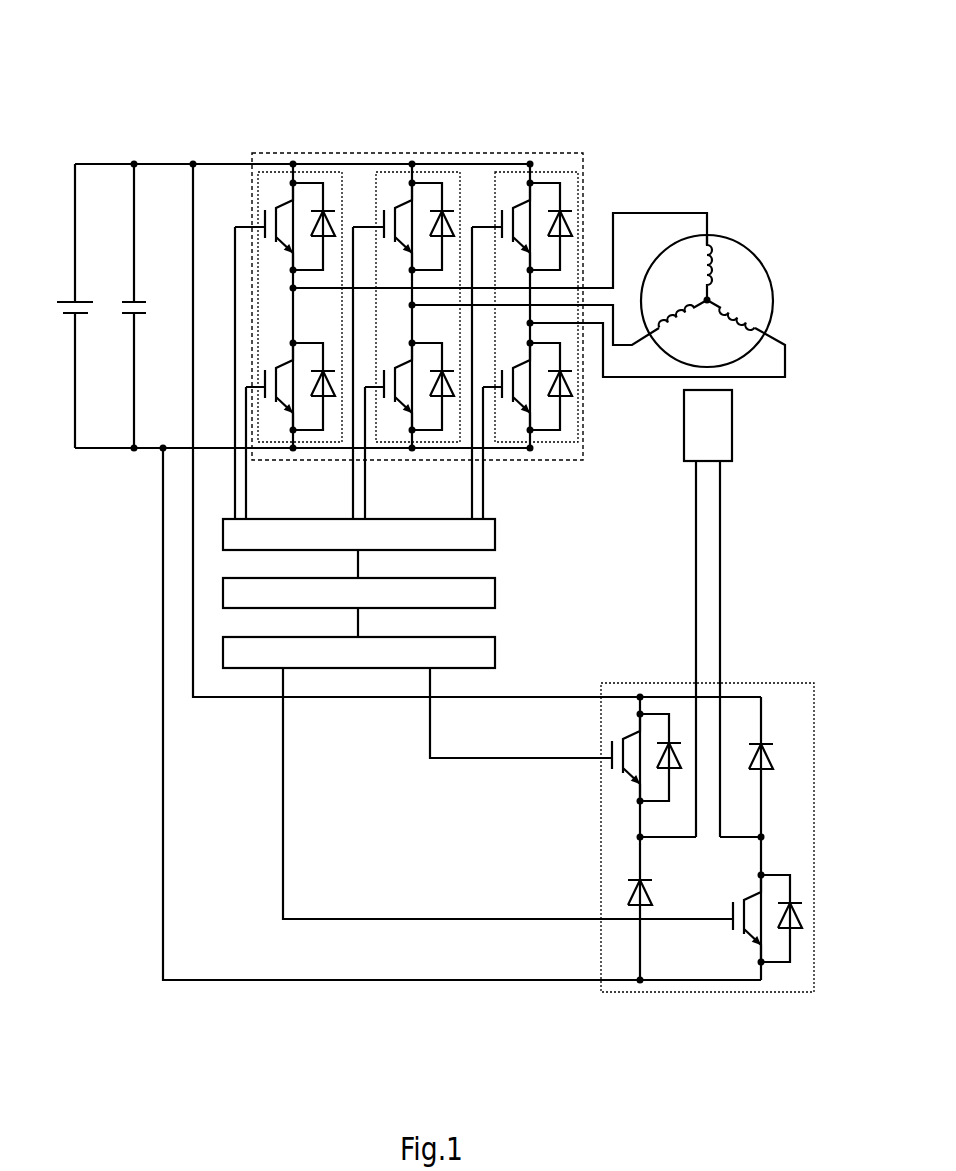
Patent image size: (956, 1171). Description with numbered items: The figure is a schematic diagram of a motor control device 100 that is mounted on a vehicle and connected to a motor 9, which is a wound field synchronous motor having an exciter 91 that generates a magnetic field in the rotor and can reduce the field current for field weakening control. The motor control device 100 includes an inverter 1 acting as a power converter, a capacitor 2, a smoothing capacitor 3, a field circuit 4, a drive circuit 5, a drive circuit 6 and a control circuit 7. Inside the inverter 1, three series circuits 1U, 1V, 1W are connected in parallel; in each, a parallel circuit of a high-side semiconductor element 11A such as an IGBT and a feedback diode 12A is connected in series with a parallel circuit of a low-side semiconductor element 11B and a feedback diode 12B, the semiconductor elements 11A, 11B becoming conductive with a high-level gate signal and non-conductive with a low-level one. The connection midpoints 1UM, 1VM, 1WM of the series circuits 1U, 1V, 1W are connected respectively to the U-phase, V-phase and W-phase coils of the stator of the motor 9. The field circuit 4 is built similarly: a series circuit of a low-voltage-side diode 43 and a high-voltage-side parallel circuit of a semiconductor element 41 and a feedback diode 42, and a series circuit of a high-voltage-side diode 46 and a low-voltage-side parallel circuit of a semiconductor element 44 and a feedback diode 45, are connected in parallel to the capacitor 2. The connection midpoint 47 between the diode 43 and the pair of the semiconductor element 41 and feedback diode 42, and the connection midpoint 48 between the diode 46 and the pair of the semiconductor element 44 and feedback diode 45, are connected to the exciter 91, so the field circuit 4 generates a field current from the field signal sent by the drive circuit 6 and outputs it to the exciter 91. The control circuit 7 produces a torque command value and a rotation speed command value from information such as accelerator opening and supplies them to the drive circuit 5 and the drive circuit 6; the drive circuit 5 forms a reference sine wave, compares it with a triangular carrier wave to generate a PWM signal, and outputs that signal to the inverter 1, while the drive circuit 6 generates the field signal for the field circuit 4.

The motor control device 100 is at (666, 79).
The inverter 1 is at (559, 153).
The series circuit 1U is at (325, 445).
The series circuit 1V is at (443, 445).
The series circuit 1W is at (560, 445).
The connection midpoint 1UM is at (297, 291).
The connection midpoint 1VM is at (416, 308).
The connection midpoint 1WM is at (534, 326).
The semiconductor element 11A is at (287, 207).
The semiconductor element 11B is at (287, 368).
The feedback diode 12A is at (311, 220).
The feedback diode 12B is at (311, 381).
The capacitor 2 is at (57, 302).
The smoothing capacitor 3 is at (122, 301).
The field circuit 4 is at (774, 683).
The semiconductor element 41 is at (612, 750).
The feedback diode 42 is at (681, 770).
The diode 43 is at (628, 888).
The semiconductor element 44 is at (731, 912).
The feedback diode 45 is at (800, 915).
The diode 46 is at (765, 773).
The connection midpoint 47 is at (645, 840).
The connection midpoint 48 is at (766, 840).
The drive circuit 5 is at (366, 546).
The drive circuit 6 is at (366, 665).
The control circuit 7 is at (366, 605).
The motor 9 is at (754, 248).
The exciter 91 is at (735, 432).